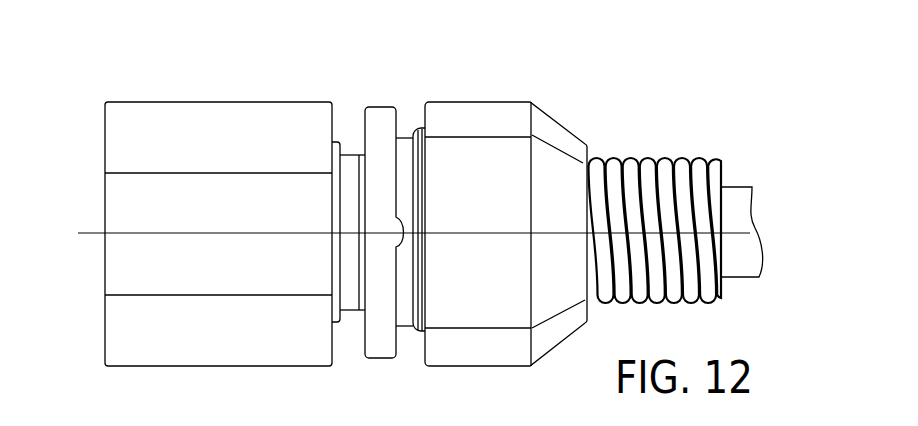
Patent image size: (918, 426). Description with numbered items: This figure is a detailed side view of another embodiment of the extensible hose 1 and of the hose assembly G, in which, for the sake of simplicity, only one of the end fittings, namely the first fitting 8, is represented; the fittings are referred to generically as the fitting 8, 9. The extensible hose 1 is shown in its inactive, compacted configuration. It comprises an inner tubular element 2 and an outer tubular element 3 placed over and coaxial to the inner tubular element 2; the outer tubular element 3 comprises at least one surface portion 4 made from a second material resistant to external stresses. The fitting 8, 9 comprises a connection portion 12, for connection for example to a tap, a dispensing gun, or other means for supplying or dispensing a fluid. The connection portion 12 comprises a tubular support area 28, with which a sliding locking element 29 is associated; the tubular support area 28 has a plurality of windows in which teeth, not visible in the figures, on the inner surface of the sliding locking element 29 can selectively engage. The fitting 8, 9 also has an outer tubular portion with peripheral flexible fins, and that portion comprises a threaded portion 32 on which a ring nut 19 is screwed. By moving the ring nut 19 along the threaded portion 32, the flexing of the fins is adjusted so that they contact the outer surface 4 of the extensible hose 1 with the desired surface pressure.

The hose assembly G is at (201, 215).
The connection portion 12 is at (201, 264).
The sliding locking element 29 is at (232, 328).
The tubular support area 28 is at (335, 322).
The first fitting 8 is at (436, 183).
The end fitting 9 is at (407, 90).
The threaded portion 32 is at (420, 313).
The ring nut 19 is at (508, 341).
The extensible hose 1 is at (649, 206).
The outer tubular element 3 is at (649, 206).
The surface portion 4 is at (612, 318).
The inner tubular element 2 is at (735, 203).